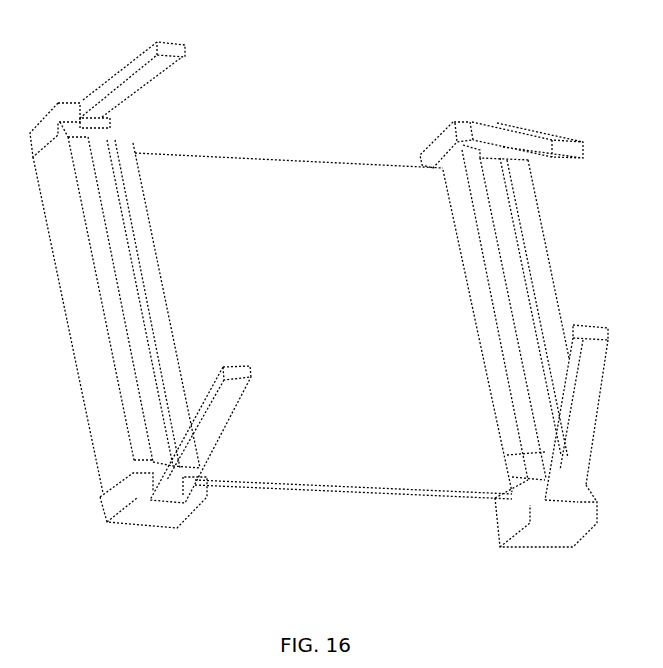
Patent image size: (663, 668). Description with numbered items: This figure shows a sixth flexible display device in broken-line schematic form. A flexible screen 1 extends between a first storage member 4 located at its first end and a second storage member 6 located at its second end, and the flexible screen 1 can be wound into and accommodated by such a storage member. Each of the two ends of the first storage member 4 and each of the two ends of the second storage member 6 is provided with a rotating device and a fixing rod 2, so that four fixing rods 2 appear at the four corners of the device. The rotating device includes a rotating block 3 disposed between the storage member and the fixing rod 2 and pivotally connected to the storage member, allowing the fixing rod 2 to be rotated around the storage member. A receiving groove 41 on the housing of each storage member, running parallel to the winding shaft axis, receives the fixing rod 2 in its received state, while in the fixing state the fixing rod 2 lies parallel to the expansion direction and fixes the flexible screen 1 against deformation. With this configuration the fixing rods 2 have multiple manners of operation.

The flexible screen 1 is at (272, 180).
The fixing rod 2 is at (117, 80).
The rotating block 3 is at (45, 118).
The first storage member 4 is at (70, 258).
The receiving groove 41 is at (133, 362).
The second storage member 6 is at (547, 268).